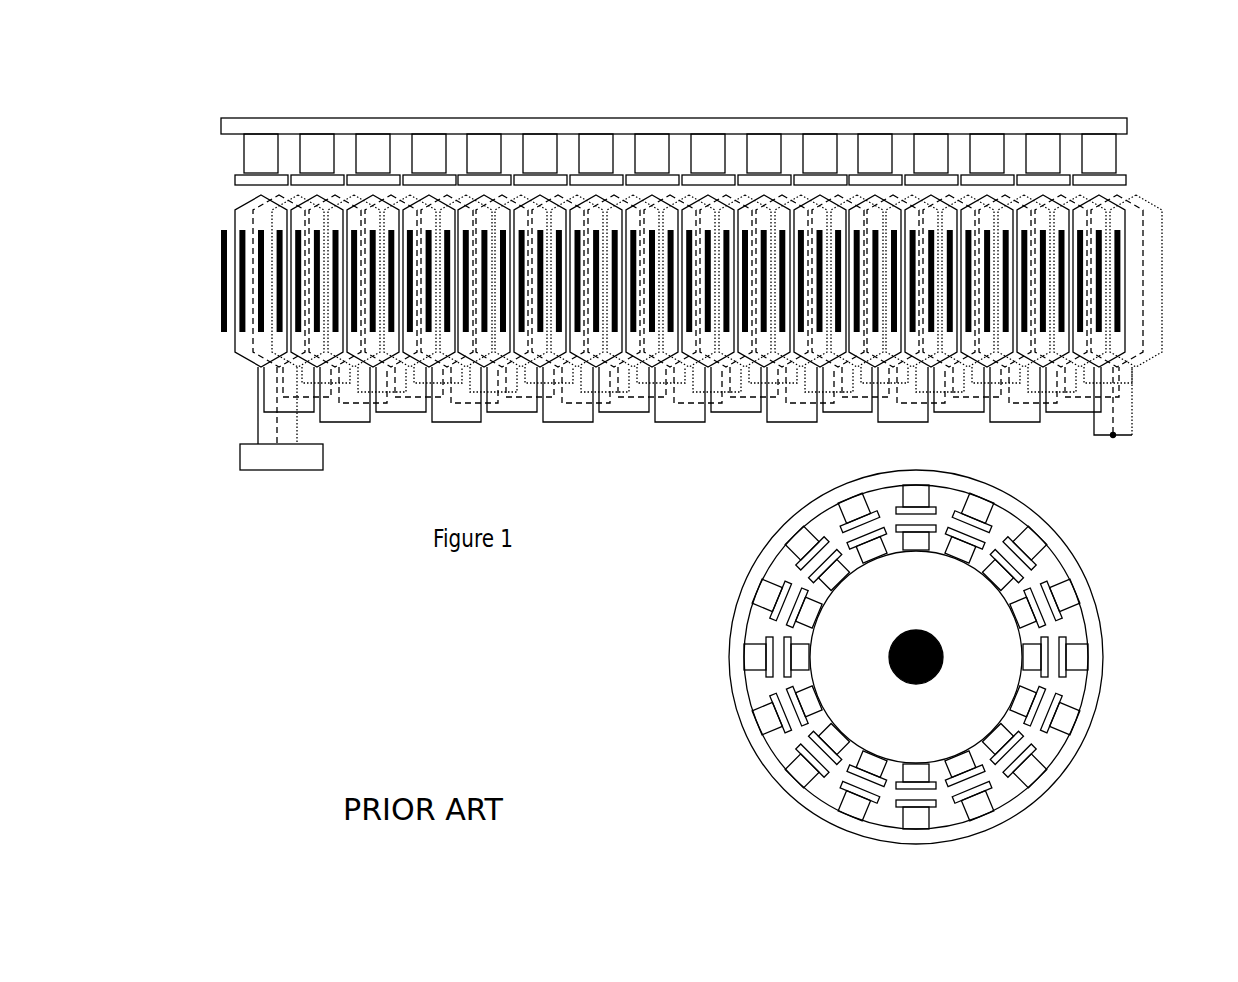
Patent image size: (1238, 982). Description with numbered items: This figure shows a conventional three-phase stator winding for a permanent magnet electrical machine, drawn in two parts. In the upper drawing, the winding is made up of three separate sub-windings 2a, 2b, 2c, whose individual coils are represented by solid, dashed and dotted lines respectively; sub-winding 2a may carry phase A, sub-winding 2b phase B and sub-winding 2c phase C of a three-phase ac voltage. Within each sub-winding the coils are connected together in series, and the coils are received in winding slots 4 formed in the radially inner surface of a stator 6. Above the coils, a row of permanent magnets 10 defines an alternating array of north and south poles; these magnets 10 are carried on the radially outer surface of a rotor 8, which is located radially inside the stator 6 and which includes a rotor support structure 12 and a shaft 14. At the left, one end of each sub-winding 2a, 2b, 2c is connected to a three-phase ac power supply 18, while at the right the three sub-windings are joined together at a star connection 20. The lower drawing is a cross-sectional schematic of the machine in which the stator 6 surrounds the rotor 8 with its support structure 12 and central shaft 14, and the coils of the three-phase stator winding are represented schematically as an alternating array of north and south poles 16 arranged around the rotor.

The sub-winding 2a is at (1126, 231).
The sub-winding 2b is at (1143, 260).
The sub-winding 2c is at (1163, 334).
The winding slots 4 is at (1107, 313).
The stator 6 is at (1091, 634).
The rotor 8 is at (970, 693).
The permanent magnets 10 is at (705, 150).
The rotor support structure 12 is at (1035, 127).
The shaft 14 is at (935, 628).
The north and south poles 16 is at (763, 717).
The three-phase ac power supply 18 is at (283, 460).
The star connection 20 is at (1117, 445).